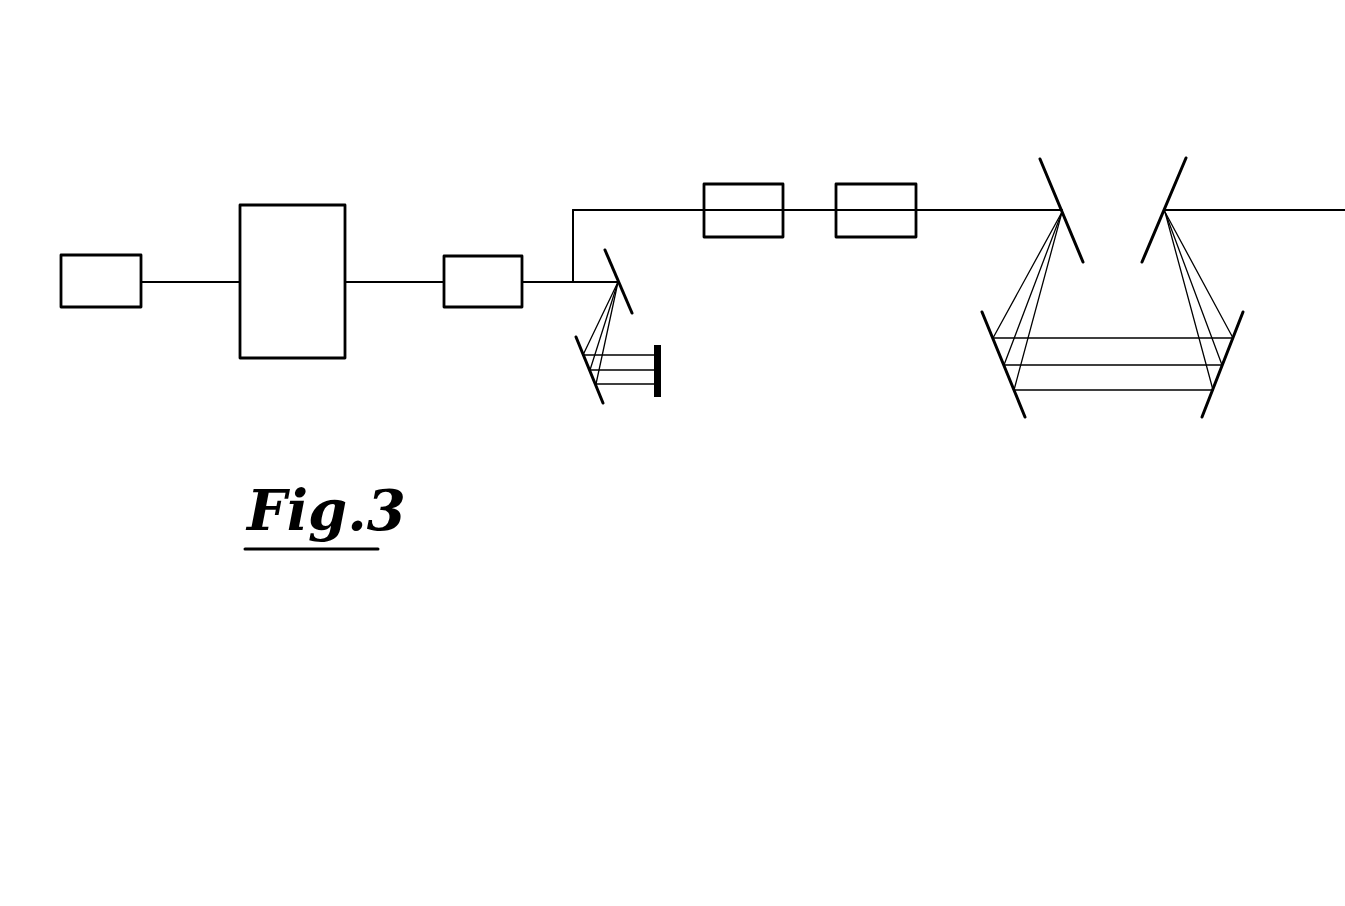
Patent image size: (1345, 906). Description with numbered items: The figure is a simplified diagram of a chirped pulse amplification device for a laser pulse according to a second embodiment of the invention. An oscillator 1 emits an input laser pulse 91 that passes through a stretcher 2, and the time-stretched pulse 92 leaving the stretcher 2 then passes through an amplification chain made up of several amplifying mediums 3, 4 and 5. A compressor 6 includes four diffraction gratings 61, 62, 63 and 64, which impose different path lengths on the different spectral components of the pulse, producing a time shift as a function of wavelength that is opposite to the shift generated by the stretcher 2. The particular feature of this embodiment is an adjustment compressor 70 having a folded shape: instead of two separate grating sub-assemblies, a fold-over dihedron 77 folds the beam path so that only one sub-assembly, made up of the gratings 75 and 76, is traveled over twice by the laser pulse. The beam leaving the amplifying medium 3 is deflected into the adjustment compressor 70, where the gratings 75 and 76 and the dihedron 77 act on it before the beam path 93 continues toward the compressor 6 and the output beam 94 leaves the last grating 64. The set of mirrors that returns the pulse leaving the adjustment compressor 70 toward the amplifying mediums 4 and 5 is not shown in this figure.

The oscillator 1 is at (100, 268).
The stretcher 2 is at (296, 236).
The amplifying medium 3 is at (482, 269).
The amplifying medium 4 is at (742, 197).
The amplifying medium 5 is at (874, 197).
The compressor 6 is at (1113, 233).
The diffraction grating 61 is at (1040, 158).
The diffraction grating 62 is at (986, 310).
The diffraction grating 63 is at (1239, 310).
The diffraction grating 64 is at (1185, 158).
The adjustment compressor 70 is at (615, 389).
The grating 75 is at (630, 303).
The grating 76 is at (597, 388).
The fold-over dihedron 77 is at (623, 410).
The input laser pulse 91 is at (191, 280).
The time-stretched pulse 92 is at (388, 281).
The laser beam 93 is at (978, 209).
The laser beam 94 is at (1263, 209).